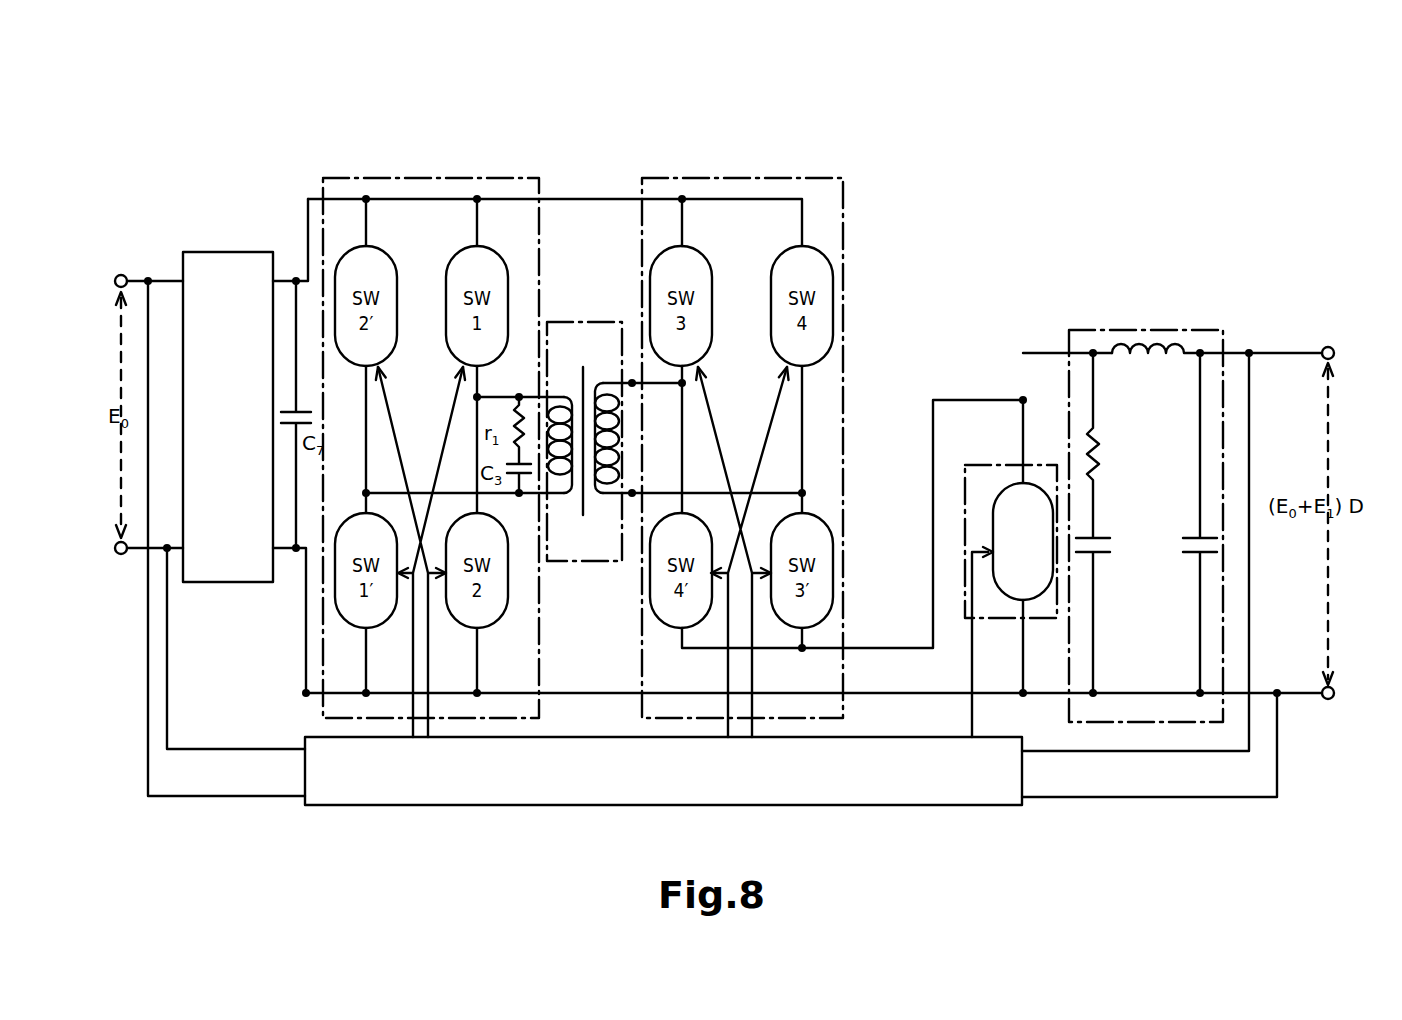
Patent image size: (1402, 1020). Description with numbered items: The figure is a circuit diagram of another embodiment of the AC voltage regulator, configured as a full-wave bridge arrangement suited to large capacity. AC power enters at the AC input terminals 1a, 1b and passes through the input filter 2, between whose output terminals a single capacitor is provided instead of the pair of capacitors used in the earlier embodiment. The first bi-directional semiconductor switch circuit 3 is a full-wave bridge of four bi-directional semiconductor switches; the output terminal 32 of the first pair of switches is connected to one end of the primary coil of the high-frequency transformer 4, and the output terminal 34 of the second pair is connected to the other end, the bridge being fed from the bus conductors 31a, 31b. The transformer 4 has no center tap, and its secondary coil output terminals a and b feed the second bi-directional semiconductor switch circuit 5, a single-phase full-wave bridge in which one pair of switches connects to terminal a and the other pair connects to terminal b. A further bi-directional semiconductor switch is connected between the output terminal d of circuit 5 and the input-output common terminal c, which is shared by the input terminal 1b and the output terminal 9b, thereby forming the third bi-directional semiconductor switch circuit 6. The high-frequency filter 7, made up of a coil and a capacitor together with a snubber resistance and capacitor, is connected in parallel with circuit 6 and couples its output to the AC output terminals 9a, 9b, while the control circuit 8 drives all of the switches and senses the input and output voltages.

The AC input terminal 1a is at (117, 282).
The AC input terminal 1b is at (117, 549).
The input filter 2 is at (222, 252).
The first bi-directional semiconductor switch circuit 3 is at (444, 178).
The positive bus conductor 31a is at (342, 197).
The negative bus conductor 31b is at (323, 690).
The output terminal 32 is at (463, 396).
The output terminal 34 is at (362, 493).
The high-frequency transformer 4 is at (566, 322).
The second bi-directional semiconductor switch circuit 5 is at (733, 178).
The third bi-directional semiconductor switch circuit 6 is at (1000, 619).
The high-frequency filter 7 is at (1192, 330).
The control circuit 8 is at (703, 805).
The AC output terminal 9a is at (1334, 355).
The AC output terminal 9b is at (1334, 695).
The output terminal of the secondary coil a is at (634, 386).
The output terminal of the secondary coil b is at (634, 490).
The input-output common terminal c is at (299, 694).
The output terminal of the second bi-directional semiconductor switch circuit d is at (1021, 399).